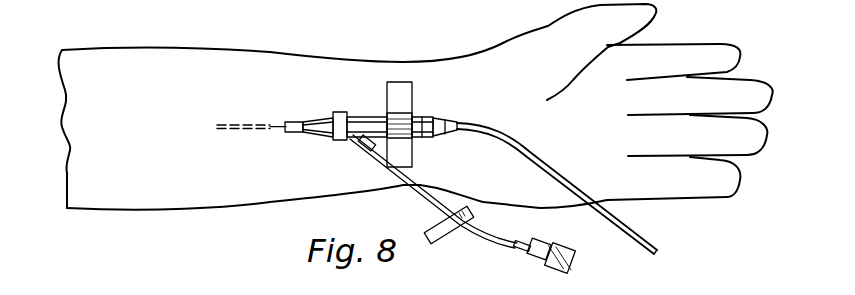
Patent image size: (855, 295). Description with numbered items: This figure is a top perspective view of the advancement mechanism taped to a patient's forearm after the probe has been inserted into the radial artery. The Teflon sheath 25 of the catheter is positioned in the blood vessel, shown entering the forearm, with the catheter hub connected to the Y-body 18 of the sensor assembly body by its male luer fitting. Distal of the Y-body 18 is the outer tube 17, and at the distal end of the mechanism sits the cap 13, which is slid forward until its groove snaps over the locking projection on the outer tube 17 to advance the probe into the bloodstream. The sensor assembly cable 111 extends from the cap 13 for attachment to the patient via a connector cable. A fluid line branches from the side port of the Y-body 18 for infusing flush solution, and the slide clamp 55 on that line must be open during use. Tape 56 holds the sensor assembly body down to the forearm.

The Teflon sheath 25 is at (278, 123).
The Y-body 18 is at (360, 113).
The tape 56 is at (412, 97).
The outer tube 17 is at (427, 112).
The cap 13 is at (442, 113).
The sensor assembly cable 111 is at (497, 125).
The slide clamp 55 is at (450, 233).